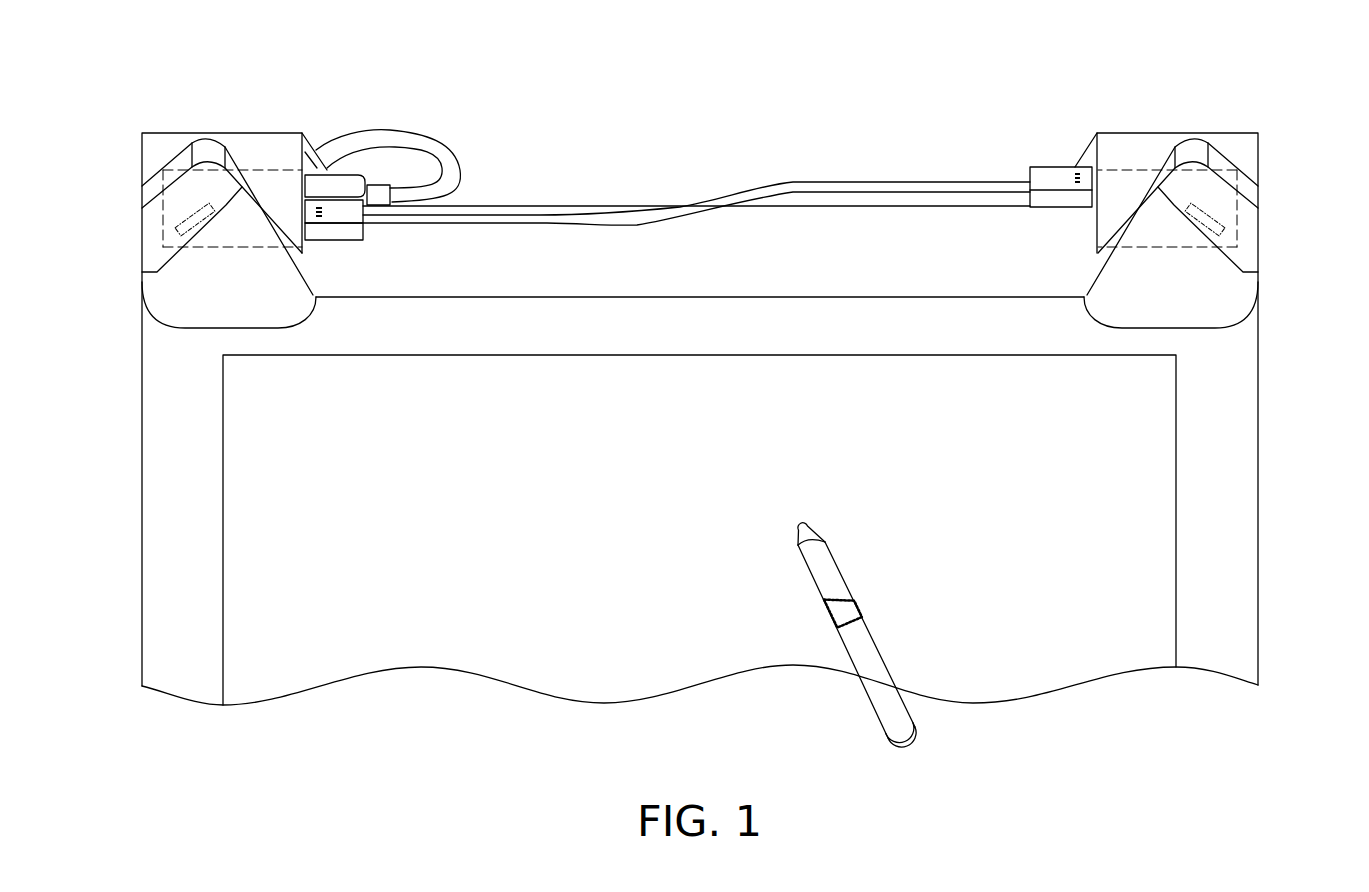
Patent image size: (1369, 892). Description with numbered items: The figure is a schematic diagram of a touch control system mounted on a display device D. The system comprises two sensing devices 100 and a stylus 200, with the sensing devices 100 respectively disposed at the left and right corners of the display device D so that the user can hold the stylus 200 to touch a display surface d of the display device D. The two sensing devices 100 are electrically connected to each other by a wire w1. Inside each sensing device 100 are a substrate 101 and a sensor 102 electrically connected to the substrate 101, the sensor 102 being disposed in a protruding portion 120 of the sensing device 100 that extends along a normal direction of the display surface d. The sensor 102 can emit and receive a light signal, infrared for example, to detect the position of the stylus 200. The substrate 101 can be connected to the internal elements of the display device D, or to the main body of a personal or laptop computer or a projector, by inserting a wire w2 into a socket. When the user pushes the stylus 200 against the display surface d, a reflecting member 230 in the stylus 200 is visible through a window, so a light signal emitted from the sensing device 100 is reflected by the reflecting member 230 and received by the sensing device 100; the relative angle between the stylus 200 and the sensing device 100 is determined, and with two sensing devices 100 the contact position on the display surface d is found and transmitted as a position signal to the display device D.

The sensing device 100 is at (143, 307).
The substrate 101 is at (275, 185).
The sensor 102 is at (187, 224).
The protruding portion 120 is at (153, 212).
The stylus 200 is at (878, 697).
The reflecting member 230 is at (848, 603).
The display device D is at (1247, 482).
The display surface d is at (1128, 562).
The wire w1 is at (803, 182).
The wire w2 is at (413, 137).